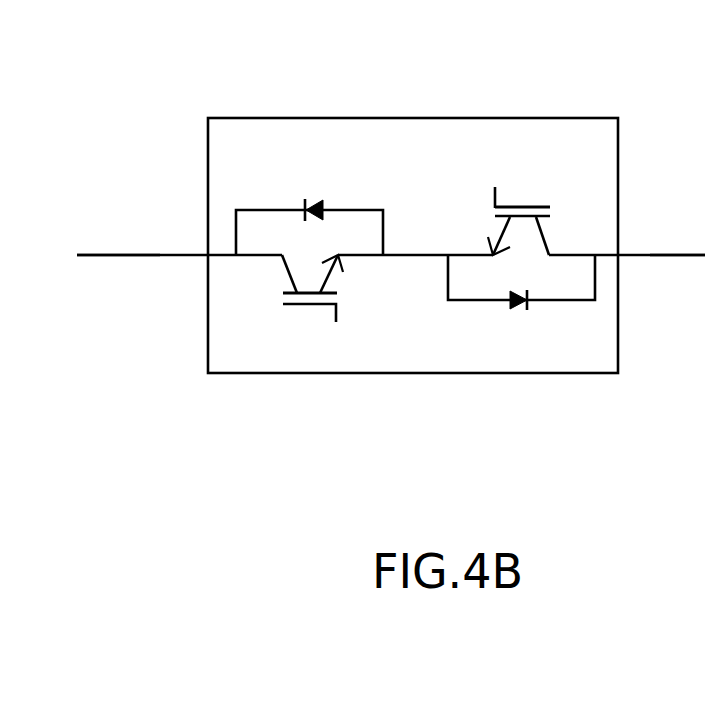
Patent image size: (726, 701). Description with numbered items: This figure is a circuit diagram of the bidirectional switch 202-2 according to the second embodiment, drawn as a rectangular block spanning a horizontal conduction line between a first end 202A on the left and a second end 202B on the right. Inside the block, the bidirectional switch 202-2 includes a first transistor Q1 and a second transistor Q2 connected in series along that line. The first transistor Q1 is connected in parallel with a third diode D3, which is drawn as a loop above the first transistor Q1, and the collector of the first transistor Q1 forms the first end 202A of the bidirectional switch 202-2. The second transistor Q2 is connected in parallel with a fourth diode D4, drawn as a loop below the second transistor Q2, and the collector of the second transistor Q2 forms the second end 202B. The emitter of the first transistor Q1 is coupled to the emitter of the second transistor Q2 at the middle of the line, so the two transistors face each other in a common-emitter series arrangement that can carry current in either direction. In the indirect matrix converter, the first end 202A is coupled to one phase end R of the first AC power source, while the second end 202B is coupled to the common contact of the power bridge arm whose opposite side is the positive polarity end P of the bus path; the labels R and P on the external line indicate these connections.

The bidirectional switch 202-2 is at (407, 150).
The first end 202A is at (163, 255).
The second end 202B is at (647, 255).
The phase end R is at (118, 238).
The positive polarity end P is at (677, 238).
The first transistor Q1 is at (312, 304).
The second transistor Q2 is at (519, 208).
The third diode D3 is at (309, 209).
The fourth diode D4 is at (521, 305).